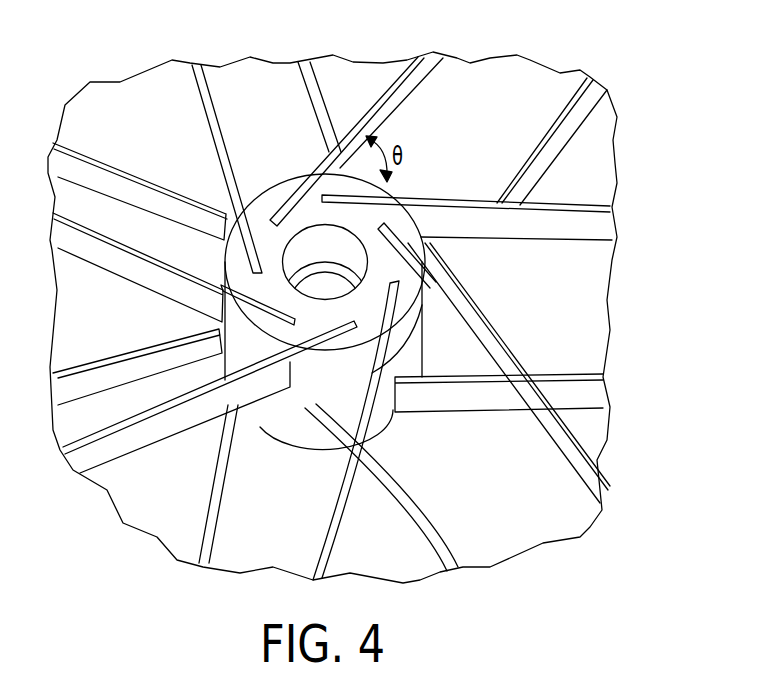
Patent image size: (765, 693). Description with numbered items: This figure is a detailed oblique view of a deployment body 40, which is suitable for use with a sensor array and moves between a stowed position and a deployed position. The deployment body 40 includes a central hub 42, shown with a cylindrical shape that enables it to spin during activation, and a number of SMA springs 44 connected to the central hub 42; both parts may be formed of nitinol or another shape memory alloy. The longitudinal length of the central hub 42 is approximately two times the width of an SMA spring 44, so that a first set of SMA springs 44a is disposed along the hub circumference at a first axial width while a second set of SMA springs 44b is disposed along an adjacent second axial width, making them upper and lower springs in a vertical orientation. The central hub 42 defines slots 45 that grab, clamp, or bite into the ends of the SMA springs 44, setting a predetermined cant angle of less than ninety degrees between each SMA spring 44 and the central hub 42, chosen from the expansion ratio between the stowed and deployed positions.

The deployment body 40 is at (178, 131).
The central hub 42 is at (430, 253).
The SMA spring 44 is at (548, 443).
The first set of SMA springs 44a is at (591, 242).
The second set of SMA springs 44b is at (461, 417).
The slots 45 is at (440, 284).